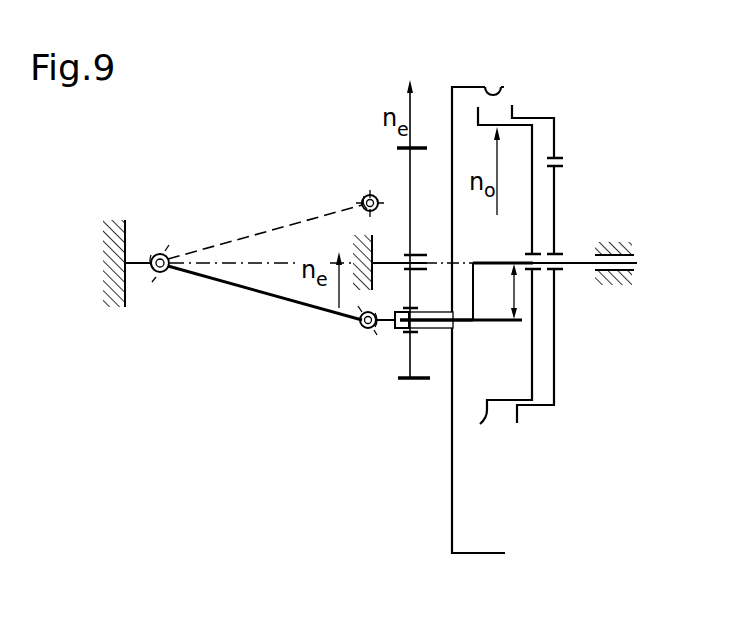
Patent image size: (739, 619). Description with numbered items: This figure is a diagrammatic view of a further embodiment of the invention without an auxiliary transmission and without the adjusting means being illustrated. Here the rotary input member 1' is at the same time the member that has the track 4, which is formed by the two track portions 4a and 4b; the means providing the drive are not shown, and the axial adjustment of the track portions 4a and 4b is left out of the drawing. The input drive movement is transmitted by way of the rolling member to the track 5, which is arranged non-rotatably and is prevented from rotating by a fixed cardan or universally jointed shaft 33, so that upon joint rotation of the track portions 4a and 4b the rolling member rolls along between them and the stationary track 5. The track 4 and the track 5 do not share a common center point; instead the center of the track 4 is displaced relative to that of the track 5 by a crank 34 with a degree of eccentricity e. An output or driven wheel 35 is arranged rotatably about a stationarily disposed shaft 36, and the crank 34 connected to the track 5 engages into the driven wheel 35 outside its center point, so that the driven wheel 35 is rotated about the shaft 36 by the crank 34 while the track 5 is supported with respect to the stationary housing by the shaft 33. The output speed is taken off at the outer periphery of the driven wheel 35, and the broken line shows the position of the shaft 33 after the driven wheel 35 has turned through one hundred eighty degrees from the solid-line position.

The rotary input member 1' is at (543, 143).
The track 4 is at (521, 288).
The track portion 4a is at (481, 423).
The track portion 4b is at (517, 423).
The track 5 is at (503, 86).
The cardan shaft 33 is at (263, 308).
The crank 34 is at (509, 320).
The driven wheel 35 is at (410, 345).
The shaft 36 is at (395, 262).